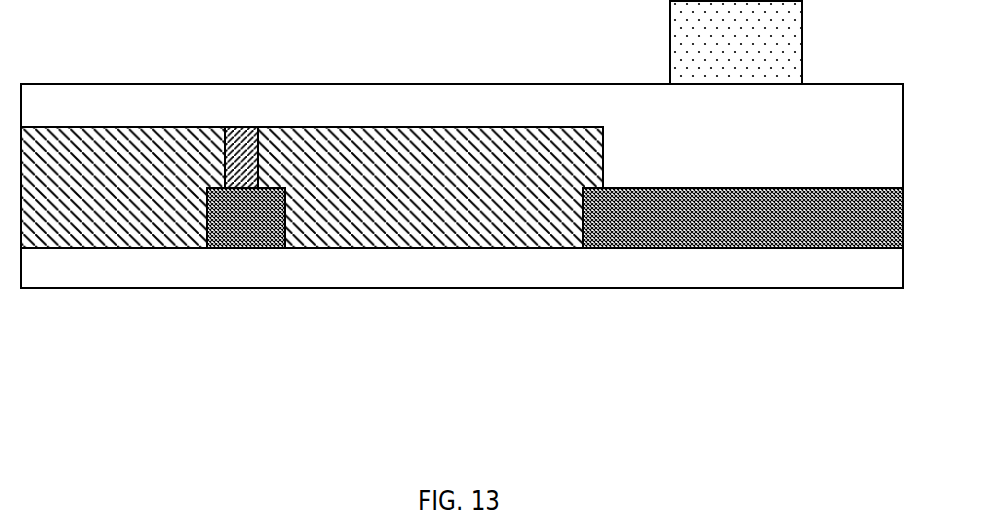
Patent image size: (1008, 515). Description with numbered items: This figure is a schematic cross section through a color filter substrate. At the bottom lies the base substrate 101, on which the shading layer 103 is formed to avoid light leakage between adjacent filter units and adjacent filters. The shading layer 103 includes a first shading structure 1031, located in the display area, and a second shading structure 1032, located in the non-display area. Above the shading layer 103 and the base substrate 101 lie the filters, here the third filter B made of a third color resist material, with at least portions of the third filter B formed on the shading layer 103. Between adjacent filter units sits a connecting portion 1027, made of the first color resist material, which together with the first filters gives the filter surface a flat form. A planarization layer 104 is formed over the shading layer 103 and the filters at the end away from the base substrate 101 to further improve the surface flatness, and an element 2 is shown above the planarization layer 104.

The light emitting element / sensor unit 2 is at (756, 47).
The base substrate 101 is at (150, 277).
The shading layer 103 is at (555, 301).
The first shading structure 1031 is at (257, 223).
The second shading structure 1032 is at (743, 282).
The connecting portion 1027 is at (242, 142).
The planarization layer 104 is at (621, 128).
The third filter B is at (114, 141).